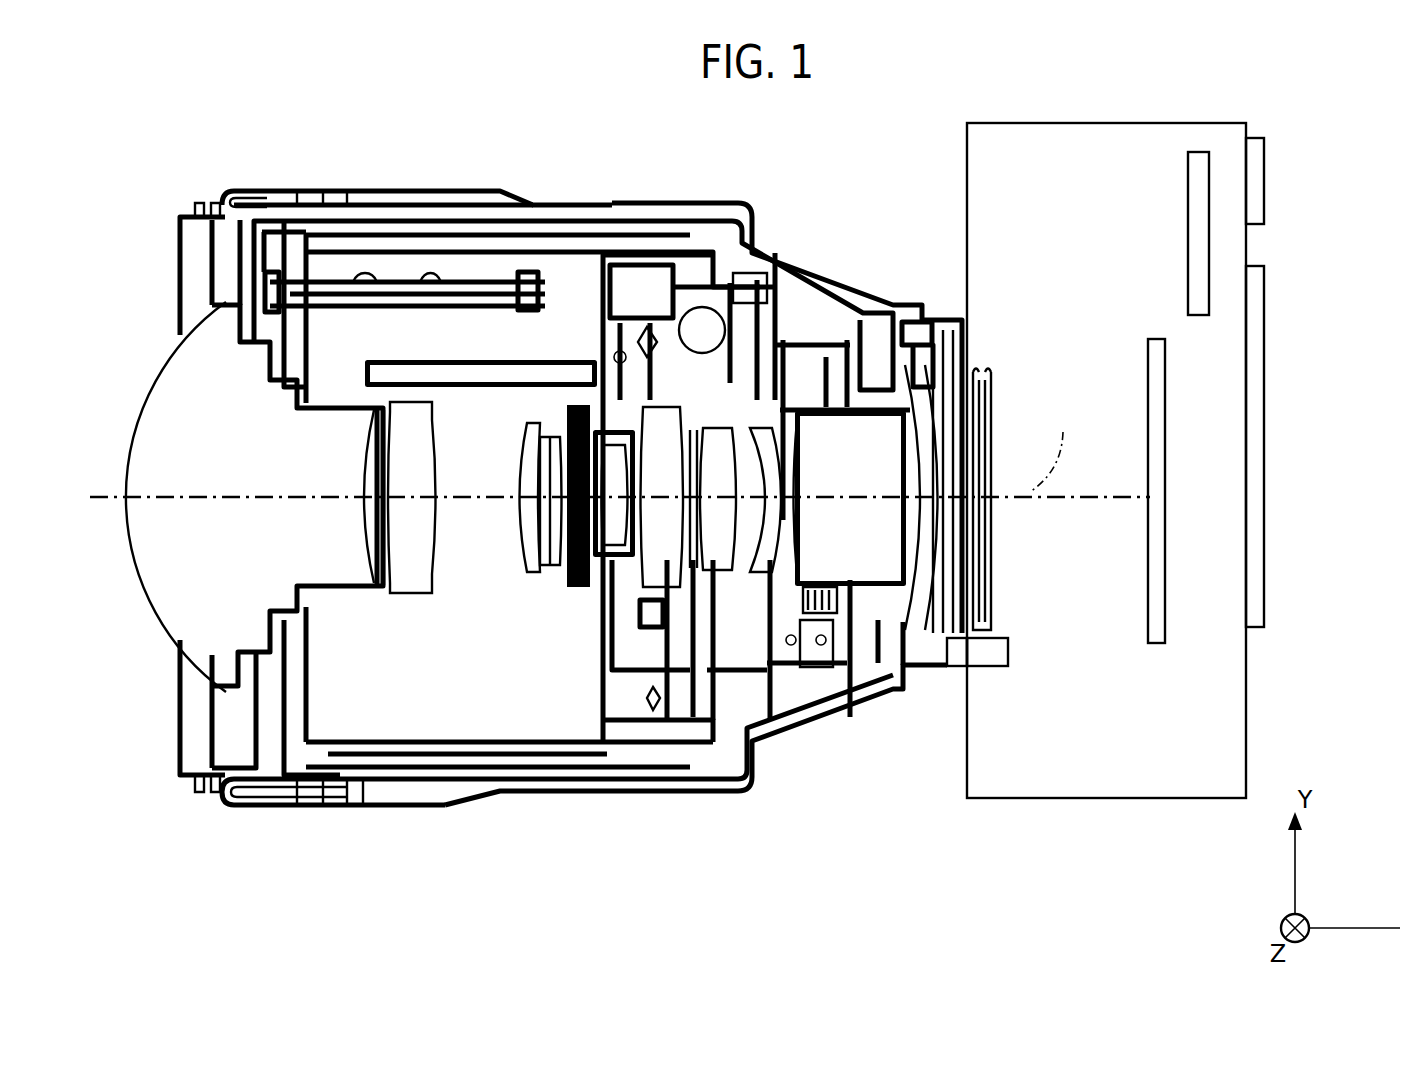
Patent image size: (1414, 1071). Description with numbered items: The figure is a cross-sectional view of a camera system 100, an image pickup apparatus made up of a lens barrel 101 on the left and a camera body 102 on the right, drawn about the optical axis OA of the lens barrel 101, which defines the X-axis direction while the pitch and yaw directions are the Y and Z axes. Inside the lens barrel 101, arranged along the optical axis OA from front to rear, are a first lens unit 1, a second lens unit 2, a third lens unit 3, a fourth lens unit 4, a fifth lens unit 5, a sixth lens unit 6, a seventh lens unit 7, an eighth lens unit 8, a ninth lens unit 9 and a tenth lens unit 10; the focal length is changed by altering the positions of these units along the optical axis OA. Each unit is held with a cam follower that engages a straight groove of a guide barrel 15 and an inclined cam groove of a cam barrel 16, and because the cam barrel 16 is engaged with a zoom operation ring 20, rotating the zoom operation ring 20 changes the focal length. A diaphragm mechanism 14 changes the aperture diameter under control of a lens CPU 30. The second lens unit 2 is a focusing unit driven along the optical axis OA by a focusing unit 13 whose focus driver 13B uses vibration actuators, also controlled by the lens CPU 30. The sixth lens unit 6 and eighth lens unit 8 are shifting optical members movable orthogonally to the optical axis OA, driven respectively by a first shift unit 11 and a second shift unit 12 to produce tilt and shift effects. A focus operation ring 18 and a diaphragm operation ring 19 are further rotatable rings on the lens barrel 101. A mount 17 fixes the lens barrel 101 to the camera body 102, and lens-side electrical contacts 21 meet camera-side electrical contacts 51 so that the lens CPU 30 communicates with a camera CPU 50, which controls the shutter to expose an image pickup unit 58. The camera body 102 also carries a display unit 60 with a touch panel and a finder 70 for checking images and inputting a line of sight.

The first lens unit 1 is at (333, 563).
The second lens unit 2 is at (402, 567).
The third lens unit 3 is at (528, 562).
The fourth lens unit 4 is at (556, 546).
The fifth lens unit 5 is at (610, 533).
The sixth lens unit 6 is at (652, 547).
The seventh lens unit 7 is at (710, 540).
The eighth lens unit 8 is at (763, 538).
The ninth lens unit 9 is at (825, 538).
The tenth lens unit 10 is at (920, 547).
The first shift unit 11 is at (603, 178).
The second shift unit 12 is at (715, 178).
The focusing unit 13 is at (260, 178).
The focus driver 13B is at (348, 303).
The diaphragm mechanism 14 is at (563, 178).
The guide barrel 15 is at (558, 752).
The cam barrel 16 is at (507, 762).
The mount 17 is at (980, 367).
The focus operation ring 18 is at (366, 808).
The diaphragm operation ring 19 is at (292, 808).
The zoom operation ring 20 is at (441, 800).
The lens-side electrical contacts 21 is at (950, 672).
The lens CPU 30 is at (920, 343).
The camera CPU 50 is at (1210, 248).
The camera-side electrical contacts 51 is at (997, 653).
The image pickup unit 58 is at (1166, 516).
The display unit 60 is at (1265, 432).
The finder 70 is at (1264, 170).
The camera system 100 is at (92, 148).
The lens barrel 101 is at (107, 882).
The camera body 102 is at (967, 882).
The optical axis OA is at (1056, 447).